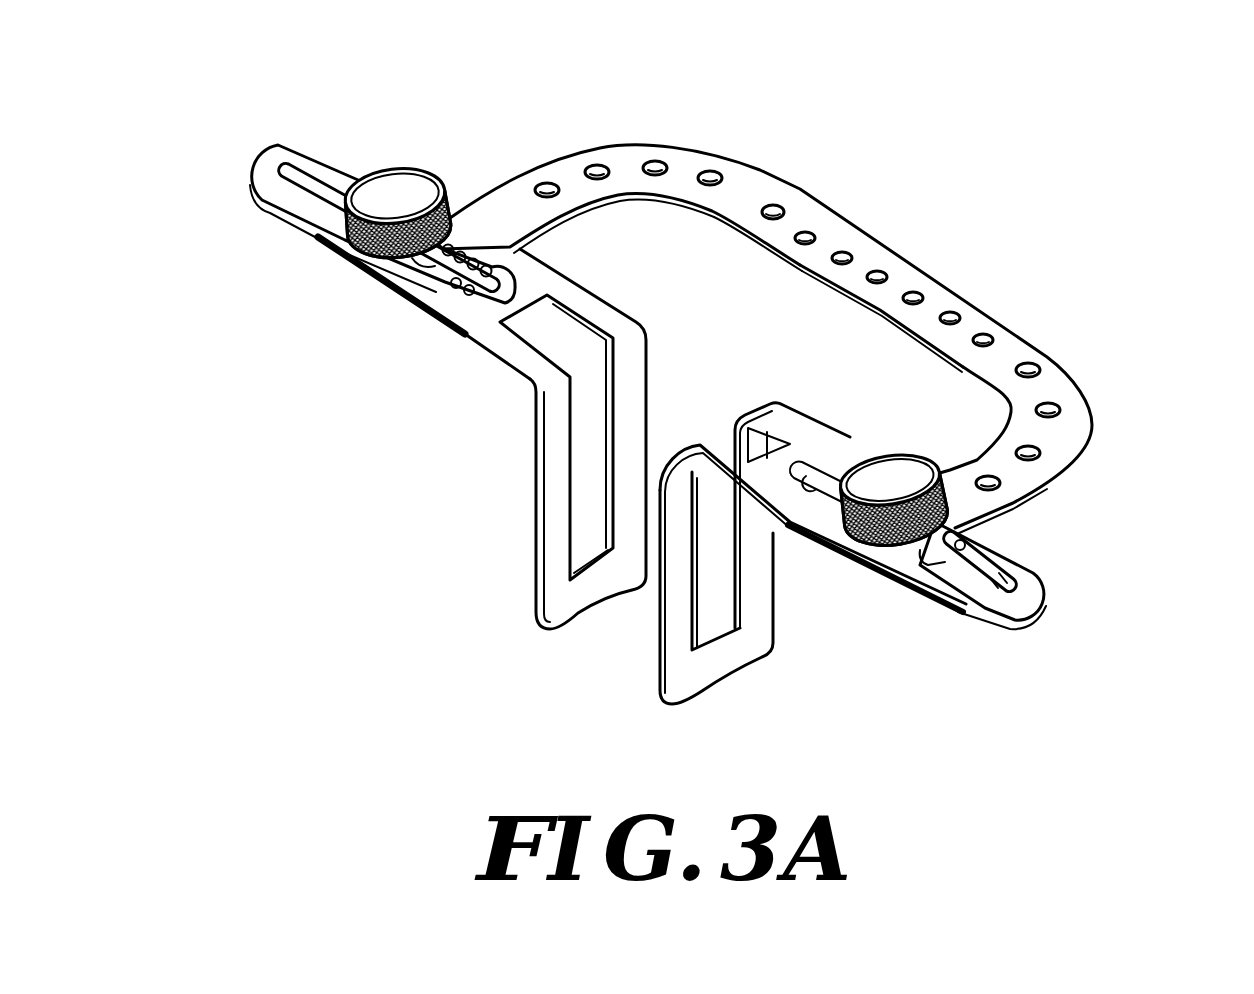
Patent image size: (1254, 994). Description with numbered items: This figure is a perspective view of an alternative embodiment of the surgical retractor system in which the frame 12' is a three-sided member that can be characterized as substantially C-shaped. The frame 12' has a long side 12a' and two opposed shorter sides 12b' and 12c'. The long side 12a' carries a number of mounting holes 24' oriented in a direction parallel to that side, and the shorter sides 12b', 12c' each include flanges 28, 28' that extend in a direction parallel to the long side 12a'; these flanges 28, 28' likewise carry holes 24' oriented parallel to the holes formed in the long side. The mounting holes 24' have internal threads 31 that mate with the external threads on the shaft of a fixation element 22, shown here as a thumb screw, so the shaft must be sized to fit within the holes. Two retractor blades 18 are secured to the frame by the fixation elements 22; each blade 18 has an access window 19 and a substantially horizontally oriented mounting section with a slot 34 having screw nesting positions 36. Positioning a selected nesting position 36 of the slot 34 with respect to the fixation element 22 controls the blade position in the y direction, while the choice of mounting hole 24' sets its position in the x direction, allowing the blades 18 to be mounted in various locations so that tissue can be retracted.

The frame 12' is at (771, 280).
The long side 12a' is at (894, 270).
The shorter side 12b' is at (621, 169).
The shorter side 12c' is at (1060, 448).
The retractor blade 18 is at (270, 158).
The access window 19 is at (590, 360).
The fixation element 22 is at (378, 212).
The mounting hole 24' is at (1010, 283).
The bracket plate 28 is at (813, 553).
The flange 28' is at (397, 308).
The internal threads 31 is at (776, 207).
The slot 34 is at (317, 188).
The screw nesting position 36 is at (485, 266).